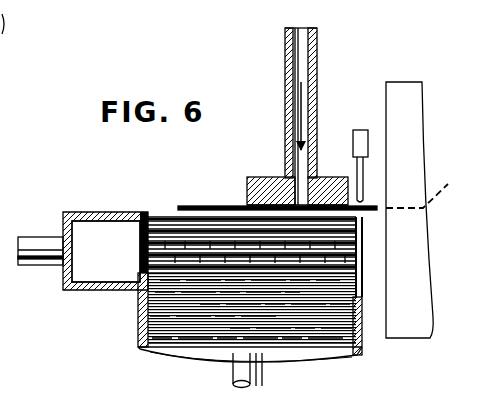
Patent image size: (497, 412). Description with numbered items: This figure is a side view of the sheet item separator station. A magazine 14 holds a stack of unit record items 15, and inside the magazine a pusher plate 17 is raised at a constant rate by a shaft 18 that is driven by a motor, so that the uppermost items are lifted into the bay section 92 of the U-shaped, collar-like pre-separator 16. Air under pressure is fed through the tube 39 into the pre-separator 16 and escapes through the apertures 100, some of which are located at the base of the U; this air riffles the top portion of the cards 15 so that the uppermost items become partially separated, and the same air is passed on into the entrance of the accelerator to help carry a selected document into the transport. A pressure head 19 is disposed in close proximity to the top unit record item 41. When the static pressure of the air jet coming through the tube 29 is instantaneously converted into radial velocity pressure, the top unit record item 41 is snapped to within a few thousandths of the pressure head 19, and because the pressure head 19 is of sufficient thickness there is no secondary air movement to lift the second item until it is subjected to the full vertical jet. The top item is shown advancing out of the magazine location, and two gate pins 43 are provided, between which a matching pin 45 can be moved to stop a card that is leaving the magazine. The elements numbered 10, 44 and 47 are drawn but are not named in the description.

The panel 10 is at (423, 92).
The magazine 14 is at (143, 346).
The unit record items 15 is at (147, 325).
The pre-separator 16 is at (96, 212).
The pusher plate 17 is at (197, 350).
The shaft 18 is at (262, 375).
The pressure head 19 is at (249, 177).
The tube 29 is at (288, 63).
The tube 39 is at (40, 237).
The top unit record item 41 is at (196, 206).
The gate pins 43 is at (362, 283).
The dashed reference line 44 is at (429, 190).
The matching pin 45 is at (363, 177).
The chamber 47 is at (113, 268).
The bay section 92 is at (323, 117).
The apertures 100 is at (165, 214).